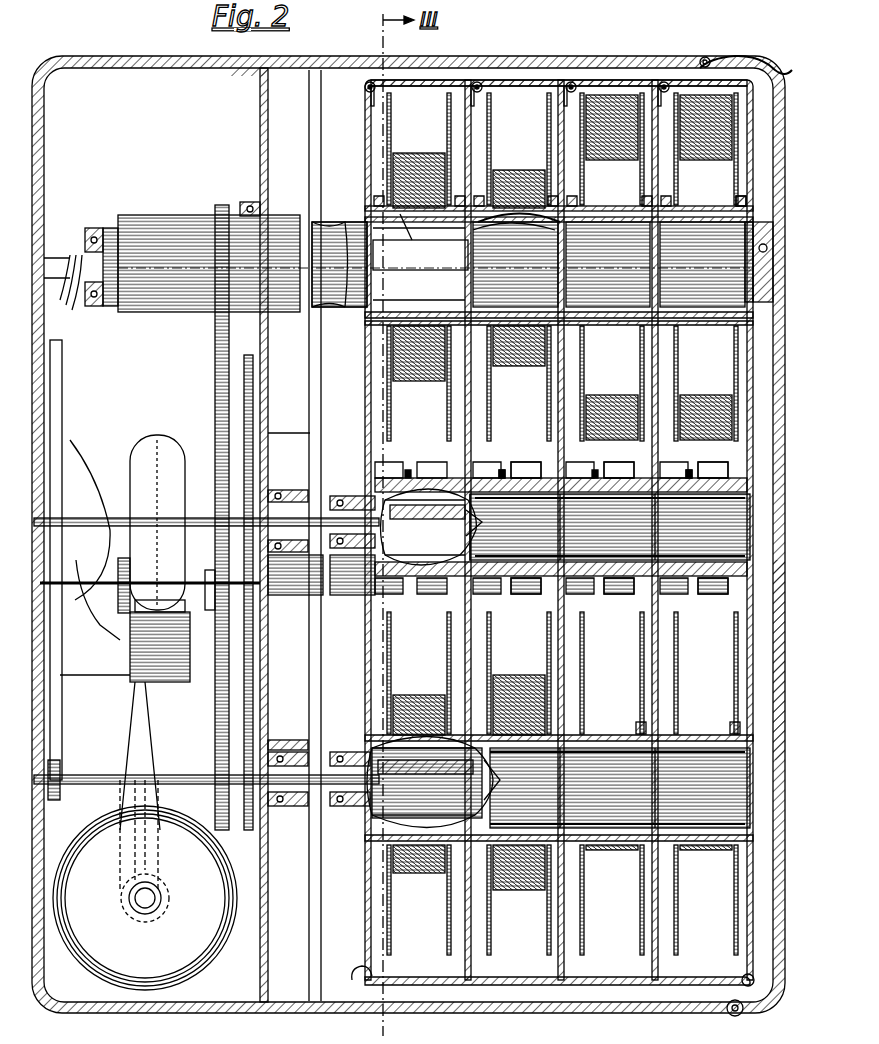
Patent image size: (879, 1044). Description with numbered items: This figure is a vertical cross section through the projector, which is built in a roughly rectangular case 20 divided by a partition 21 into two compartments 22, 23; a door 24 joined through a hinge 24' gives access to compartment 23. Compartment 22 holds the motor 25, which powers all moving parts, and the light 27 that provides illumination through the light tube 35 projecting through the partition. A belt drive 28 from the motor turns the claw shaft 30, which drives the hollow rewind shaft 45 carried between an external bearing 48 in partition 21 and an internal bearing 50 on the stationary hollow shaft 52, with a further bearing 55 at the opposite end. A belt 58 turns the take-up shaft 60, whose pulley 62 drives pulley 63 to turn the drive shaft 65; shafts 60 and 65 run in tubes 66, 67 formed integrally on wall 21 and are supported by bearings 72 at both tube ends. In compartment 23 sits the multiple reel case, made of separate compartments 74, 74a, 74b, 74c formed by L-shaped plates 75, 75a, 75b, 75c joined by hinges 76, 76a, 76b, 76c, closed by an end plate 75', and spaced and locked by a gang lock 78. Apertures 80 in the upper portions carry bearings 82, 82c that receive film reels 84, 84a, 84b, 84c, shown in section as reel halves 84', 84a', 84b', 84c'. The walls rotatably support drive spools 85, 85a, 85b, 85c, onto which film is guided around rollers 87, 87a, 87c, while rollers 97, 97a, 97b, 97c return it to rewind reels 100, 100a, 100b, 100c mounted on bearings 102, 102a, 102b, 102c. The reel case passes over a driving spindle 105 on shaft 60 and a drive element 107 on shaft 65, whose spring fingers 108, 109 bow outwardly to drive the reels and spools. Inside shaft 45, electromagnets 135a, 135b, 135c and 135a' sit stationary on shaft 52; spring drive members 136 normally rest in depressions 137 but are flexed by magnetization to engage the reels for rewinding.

The case 20 is at (152, 56).
The partition 21 is at (260, 112).
The compartment 22 is at (152, 140).
The compartment 23 is at (287, 534).
The door 24 is at (790, 660).
The hinge 24' is at (751, 1020).
The motor 25 is at (145, 885).
The light 27 is at (148, 445).
The belt drive 28 is at (124, 702).
The claw shaft 30 is at (70, 585).
The light tube 35 is at (283, 446).
The hollow rewind shaft 45 is at (270, 240).
The external bearing 48 is at (244, 205).
The internal bearing 50 is at (85, 242).
The stationary hollow shaft 52 is at (108, 262).
The bearing 55 is at (766, 232).
The belt 58 is at (216, 692).
The take-up shaft 60 is at (170, 775).
The pulley 62 is at (62, 795).
The pulley 63 is at (62, 392).
The drive shaft 65 is at (148, 518).
The tube 66 is at (288, 740).
The tube 67 is at (288, 490).
The bearings 72 is at (348, 810).
The compartment 74 is at (414, 92).
The compartment 74a is at (515, 92).
The compartment 74b is at (603, 92).
The compartment 74c is at (690, 92).
The L-shaped plate 75 is at (493, 126).
The end plate 75' is at (352, 90).
The L-shaped plate 75a is at (559, 117).
The L-shaped plate 75b is at (648, 90).
The L-shaped plate 75c is at (752, 88).
The hinge 76 is at (369, 82).
The hinge 76a is at (479, 82).
The hinge 76b is at (573, 82).
The hinge 76c is at (666, 82).
The gang lock 78 is at (594, 978).
The apertures 80 is at (368, 222).
The bearings 82 is at (378, 204).
The bearings 82c is at (736, 202).
The film reel 84 is at (418, 179).
The film reel 84a is at (518, 168).
The film reel 84b is at (612, 141).
The film reel 84c is at (706, 141).
The weight block 84' is at (419, 383).
The weight block 84a' is at (519, 383).
The weight block 84b' is at (612, 383).
The weight block 84c' is at (706, 383).
The drive spool 85 is at (410, 478).
The drive spool 85a is at (504, 478).
The drive spool 85b is at (596, 478).
The drive spool 85c is at (673, 478).
The rollers 87 is at (432, 470).
The rollers 87a is at (500, 462).
The rollers 87c is at (706, 478).
The rollers 97 is at (416, 596).
The rollers 97a is at (500, 596).
The rollers 97b is at (594, 596).
The rollers 97c is at (686, 596).
The rewind reel 100 is at (391, 640).
The rewind reel 100a is at (491, 645).
The rewind reel 100b is at (584, 640).
The rewind reel 100c is at (678, 640).
The bearings 102 is at (386, 710).
The bearings 102a is at (548, 700).
The bearings 102b is at (645, 726).
The bearings 102c is at (740, 726).
The driving spindle 105 is at (478, 808).
The drive element 107 is at (432, 527).
The spring fingers 108 is at (446, 796).
The spring fingers 109 is at (470, 530).
The electromagnet 135a is at (465, 264).
The electromagnet 135a' is at (373, 264).
The electromagnet 135b is at (608, 264).
The electromagnet 135c is at (702, 264).
The spring drive members 136 is at (466, 238).
The depressions 137 is at (510, 226).